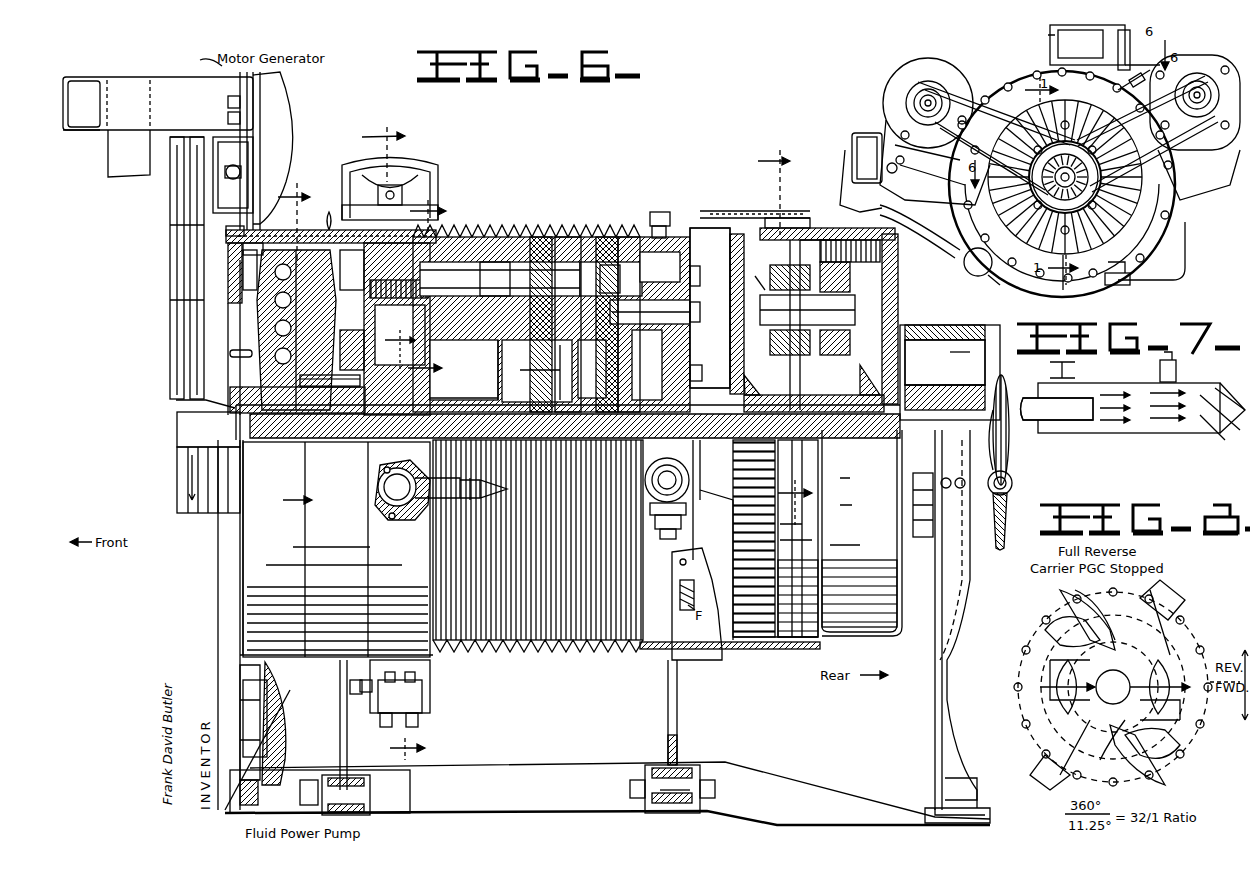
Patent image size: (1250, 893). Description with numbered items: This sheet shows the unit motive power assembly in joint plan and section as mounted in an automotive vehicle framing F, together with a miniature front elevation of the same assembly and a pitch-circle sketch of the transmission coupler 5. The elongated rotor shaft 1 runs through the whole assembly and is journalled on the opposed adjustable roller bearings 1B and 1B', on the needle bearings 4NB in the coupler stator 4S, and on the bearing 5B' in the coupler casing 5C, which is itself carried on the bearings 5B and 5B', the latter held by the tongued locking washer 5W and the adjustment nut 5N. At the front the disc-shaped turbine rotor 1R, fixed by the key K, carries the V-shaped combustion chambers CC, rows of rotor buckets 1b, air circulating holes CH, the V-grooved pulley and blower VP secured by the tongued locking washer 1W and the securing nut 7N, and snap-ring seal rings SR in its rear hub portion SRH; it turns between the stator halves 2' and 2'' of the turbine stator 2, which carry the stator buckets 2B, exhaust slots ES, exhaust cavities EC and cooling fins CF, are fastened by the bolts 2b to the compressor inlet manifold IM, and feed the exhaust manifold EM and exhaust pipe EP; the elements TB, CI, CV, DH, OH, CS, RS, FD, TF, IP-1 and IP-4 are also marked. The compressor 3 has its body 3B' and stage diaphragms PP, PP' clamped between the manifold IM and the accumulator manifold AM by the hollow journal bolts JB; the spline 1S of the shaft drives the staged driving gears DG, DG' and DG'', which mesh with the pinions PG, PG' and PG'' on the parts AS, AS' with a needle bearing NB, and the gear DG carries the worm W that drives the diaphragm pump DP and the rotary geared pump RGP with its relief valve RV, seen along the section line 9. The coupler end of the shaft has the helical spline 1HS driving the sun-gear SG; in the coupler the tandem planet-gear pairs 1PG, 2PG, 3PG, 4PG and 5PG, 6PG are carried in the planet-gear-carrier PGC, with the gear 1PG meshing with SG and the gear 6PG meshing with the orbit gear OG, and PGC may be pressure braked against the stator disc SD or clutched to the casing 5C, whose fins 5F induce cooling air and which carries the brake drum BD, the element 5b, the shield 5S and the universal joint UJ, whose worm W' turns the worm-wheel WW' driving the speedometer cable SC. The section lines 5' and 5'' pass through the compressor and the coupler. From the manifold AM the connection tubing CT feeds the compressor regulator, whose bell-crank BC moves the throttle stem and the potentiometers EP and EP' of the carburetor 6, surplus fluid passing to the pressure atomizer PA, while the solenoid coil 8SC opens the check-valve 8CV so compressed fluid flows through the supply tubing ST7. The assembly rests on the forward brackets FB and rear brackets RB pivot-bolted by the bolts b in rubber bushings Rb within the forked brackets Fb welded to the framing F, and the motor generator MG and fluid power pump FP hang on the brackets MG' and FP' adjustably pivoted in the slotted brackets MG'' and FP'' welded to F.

In FIG. 6, the motor generator MG is at (190, 144).
In FIG. 7, the motor generator MG is at (922, 131).
In FIG. 6, the motor generator shaft MG' is at (257, 121).
In FIG. 7, the motor generator shaft MG' is at (864, 161).
In FIG. 6, the motor generator pulley MG'' is at (215, 95).
In FIG. 7, the motor generator pulley MG'' is at (912, 167).
In FIG. 6, the frame F is at (750, 762).
In FIG. 6, the vertical plates VP is at (175, 393).
In FIG. 6, the nut block 7N is at (220, 432).
In FIG. 6, the washer 1W is at (233, 420).
In FIG. 6, the drive pulley yoke DP is at (438, 172).
In FIG. 6, the section line 9 is at (393, 445).
In FIG. 6, the bevel gear 2B is at (330, 305).
In FIG. 6, the splined shaft SRH is at (397, 329).
In FIG. 6, the clutch cone CC is at (365, 338).
In FIG. 6, the clutch fork CF is at (245, 336).
In FIG. 6, the clutch hub CH is at (248, 380).
In FIG. 6, the end cap EC is at (245, 258).
In FIG. 6, the shaft end 2' is at (219, 538).
In FIG. 6, the main shaft 2 is at (228, 337).
In FIG. 7, the main shaft 2 is at (1161, 242).
In FIG. 6, the bearing 2b is at (245, 233).
In FIG. 6, the end shaft ES is at (286, 240).
In FIG. 6, the bearing 1b is at (315, 243).
In FIG. 6, the thrust bearing TB is at (320, 232).
In FIG. 6, the shaft section 2'' is at (365, 388).
In FIG. 6, the section line 5 is at (575, 419).
In FIG. 6, the planet gear PG is at (551, 309).
In FIG. 6, the needle bearing NB is at (500, 279).
In FIG. 6, the axle shaft AS is at (495, 279).
In FIG. 6, the axle shaft AS' is at (606, 279).
In FIG. 6, the drive gear DG is at (464, 370).
In FIG. 6, the shaft 1S is at (490, 398).
In FIG. 6, the drive gear DG' is at (537, 371).
In FIG. 6, the planet pinion PP is at (538, 304).
In FIG. 6, the planet gear PG' is at (575, 304).
In FIG. 6, the planet pinion PP' is at (607, 308).
In FIG. 6, the planet gear PG'' is at (637, 302).
In FIG. 6, the arm AM is at (664, 218).
In FIG. 6, the section line 5' is at (428, 287).
In FIG. 6, the section line 5'' is at (785, 334).
In FIG. 6, the clutch internal CI is at (748, 260).
In FIG. 6, the journal bearing JB is at (699, 268).
In FIG. 6, the output gear OG is at (745, 283).
In FIG. 8, the output gear OG is at (1030, 700).
In FIG. 6, the spring disc SD is at (748, 298).
In FIG. 6, the clutch valve CV is at (740, 311).
In FIG. 6, the drive hub DH is at (745, 330).
In FIG. 6, the drive gear DG'' is at (723, 347).
In FIG. 6, the bearing 5B is at (717, 369).
In FIG. 6, the flange 5F is at (748, 225).
In FIG. 6, the oil hole OH is at (788, 225).
In FIG. 6, the bearing 5b is at (820, 225).
In FIG. 6, the first planet gear 1PG is at (844, 245).
In FIG. 8, the first planet gear 1PG is at (1030, 672).
In FIG. 6, the clutch spring CS is at (885, 270).
In FIG. 6, the planet gear carrier PGC is at (885, 291).
In FIG. 8, the planet gear carrier PGC is at (1160, 650).
In FIG. 6, the casing 5C is at (885, 308).
In FIG. 6, the brake drum BD is at (985, 325).
In FIG. 6, the rear shaft RS is at (945, 362).
In FIG. 6, the bearing 5B' is at (928, 373).
In FIG. 6, the washer 5W is at (945, 388).
In FIG. 6, the nut 5N is at (992, 380).
In FIG. 6, the induction motor IM is at (368, 530).
In FIG. 6, the wheel bearing W is at (437, 482).
In FIG. 6, the pivot arm PA is at (406, 512).
In FIG. 6, the section line 6 is at (382, 470).
In FIG. 6, the key K is at (304, 458).
In FIG. 6, the rear bearing RB is at (262, 448).
In FIG. 6, the ring 1R is at (272, 440).
In FIG. 6, the section line 1 is at (295, 447).
In FIG. 6, the snap ring SR is at (310, 440).
In FIG. 6, the bearing 1B is at (348, 451).
In FIG. 6, the bellows 3 is at (498, 646).
In FIG. 6, the bellows band 3B' is at (542, 658).
In FIG. 6, the solenoid coil 8SC is at (667, 477).
In FIG. 6, the control valve 8CV is at (685, 510).
In FIG. 6, the stop ST7 is at (685, 531).
In FIG. 6, the bearing 1B' is at (651, 423).
In FIG. 6, the shaft 4S is at (696, 488).
In FIG. 6, the needle bearing 4NB is at (716, 537).
In FIG. 6, the coolant tube CT is at (665, 665).
In FIG. 7, the coolant tube CT is at (1158, 249).
In FIG. 6, the shelf 5S is at (722, 655).
In FIG. 6, the hollow shaft 1HS is at (817, 533).
In FIG. 6, the sun gear SG is at (869, 445).
In FIG. 6, the worm wheel WW' is at (991, 626).
In FIG. 6, the worm W' is at (1033, 465).
In FIG. 6, the universal joint UJ is at (1012, 455).
In FIG. 7, the universal joint UJ is at (1133, 396).
In FIG. 6, the screw SC is at (1008, 518).
In FIG. 6, the exhaust pipe EP is at (1063, 441).
In FIG. 7, the exhaust pipe EP is at (1018, 154).
In FIG. 6, the rubber bushing Rb is at (705, 798).
In FIG. 6, the bolt b is at (640, 786).
In FIG. 6, the frame bolt Fb is at (645, 803).
In FIG. 6, the fluid pump / fan pulley FP is at (317, 737).
In FIG. 7, the fluid pump / fan pulley FP is at (1195, 120).
In FIG. 6, the fluid pump gear FP' is at (294, 691).
In FIG. 7, the fluid pump gear FP' is at (1202, 152).
In FIG. 6, the fluid pump housing FP'' is at (297, 744).
In FIG. 7, the fluid pump housing FP'' is at (1206, 167).
In FIG. 6, the regulator pump RGP is at (430, 698).
In FIG. 6, the relief valve RV is at (353, 696).
In FIG. 6, the fluid bracket FB is at (348, 760).
In FIG. 7, the impeller IP-1 is at (1085, 100).
In FIG. 7, the fan drive FD is at (1115, 205).
In FIG. 7, the impeller IP-4 is at (1125, 245).
In FIG. 7, the tension fastener TF is at (1134, 80).
In FIG. 7, the bracket BC is at (1052, 48).
In FIG. 7, the exhaust pipe EP' is at (1082, 35).
In FIG. 7, the exhaust manifold EM is at (982, 268).
In FIG. 8, the second planet gear 2PG is at (1035, 660).
In FIG. 8, the third planet gear 3PG is at (1050, 630).
In FIG. 8, the fourth planet gear 4PG is at (1055, 612).
In FIG. 8, the fifth planet gear 5PG is at (1100, 676).
In FIG. 8, the sixth planet gear 6PG is at (1045, 740).